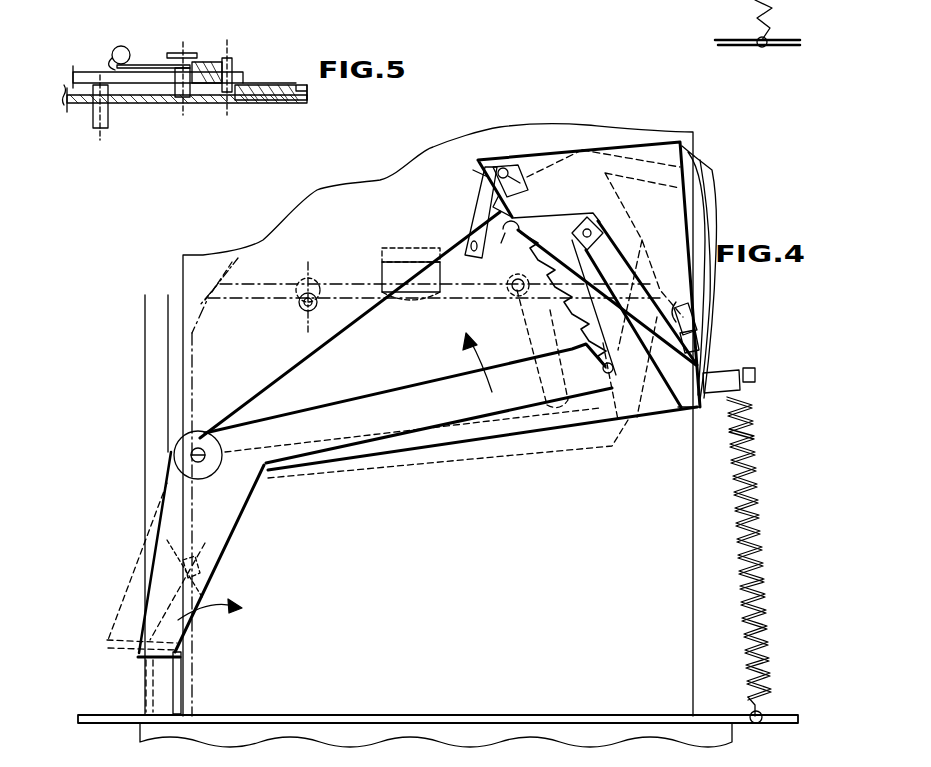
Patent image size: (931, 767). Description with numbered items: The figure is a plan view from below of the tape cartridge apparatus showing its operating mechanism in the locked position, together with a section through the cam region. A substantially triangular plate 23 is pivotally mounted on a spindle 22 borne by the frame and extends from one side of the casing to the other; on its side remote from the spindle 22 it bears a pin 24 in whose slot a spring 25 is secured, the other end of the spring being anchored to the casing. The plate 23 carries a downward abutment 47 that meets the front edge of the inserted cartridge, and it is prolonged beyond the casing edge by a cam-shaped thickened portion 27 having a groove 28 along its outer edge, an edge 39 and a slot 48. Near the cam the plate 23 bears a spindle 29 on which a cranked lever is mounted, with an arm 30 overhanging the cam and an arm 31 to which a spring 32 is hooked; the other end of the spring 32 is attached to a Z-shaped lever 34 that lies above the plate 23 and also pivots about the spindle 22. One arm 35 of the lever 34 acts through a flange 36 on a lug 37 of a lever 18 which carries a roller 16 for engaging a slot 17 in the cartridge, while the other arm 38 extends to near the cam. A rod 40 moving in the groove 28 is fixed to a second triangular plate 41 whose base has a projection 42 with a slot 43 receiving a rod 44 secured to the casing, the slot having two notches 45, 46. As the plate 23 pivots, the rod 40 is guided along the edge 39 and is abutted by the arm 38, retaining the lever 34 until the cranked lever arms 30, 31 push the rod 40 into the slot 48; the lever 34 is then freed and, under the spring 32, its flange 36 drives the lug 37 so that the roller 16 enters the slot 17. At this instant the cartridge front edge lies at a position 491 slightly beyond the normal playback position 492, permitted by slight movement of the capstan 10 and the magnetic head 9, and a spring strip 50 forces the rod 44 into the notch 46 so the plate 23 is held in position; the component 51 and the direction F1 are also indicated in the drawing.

In FIG. 4, the magnetic head 9 is at (382, 280).
In FIG. 4, the capstan 10 is at (313, 281).
In FIG. 4, the roller 16 is at (207, 597).
In FIG. 4, the slot 17 is at (227, 550).
In FIG. 4, the lever 18 is at (150, 330).
In FIG. 4, the spindle 22 is at (195, 455).
In FIG. 5, the triangular plate 23 is at (140, 106).
In FIG. 4, the triangular plate 23 is at (469, 429).
In FIG. 4, the pin 24 is at (758, 379).
In FIG. 4, the spring 25 is at (755, 573).
In FIG. 5, the cam-shaped thickened portion 27 is at (273, 83).
In FIG. 4, the cam-shaped thickened portion 27 is at (700, 205).
In FIG. 5, the groove 28 is at (303, 85).
In FIG. 4, the groove 28 is at (707, 220).
In FIG. 5, the spindle 29 is at (183, 53).
In FIG. 4, the spindle 29 is at (590, 224).
In FIG. 5, the arm 30 is at (200, 67).
In FIG. 4, the arm 30 is at (699, 340).
In FIG. 5, the arm 31 is at (147, 67).
In FIG. 4, the arm 31 is at (553, 266).
In FIG. 5, the spring 32 is at (117, 50).
In FIG. 4, the spring 32 is at (545, 326).
In FIG. 4, the Z-shaped lever 34 is at (345, 435).
In FIG. 4, the arm 35 is at (160, 560).
In FIG. 4, the flange 36 is at (142, 662).
In FIG. 4, the lug 37 is at (182, 680).
In FIG. 4, the arm 38 is at (612, 330).
In FIG. 5, the edge 39 is at (253, 107).
In FIG. 4, the edge 39 is at (632, 214).
In FIG. 5, the rod 40 is at (227, 57).
In FIG. 4, the rod 40 is at (690, 322).
In FIG. 5, the triangular plate 41 is at (90, 77).
In FIG. 4, the triangular plate 41 is at (660, 165).
In FIG. 4, the projection 42 is at (545, 180).
In FIG. 4, the slot 43 is at (512, 165).
In FIG. 4, the rod 44 is at (503, 168).
In FIG. 4, the notch 45 is at (528, 195).
In FIG. 4, the notch 46 is at (508, 235).
In FIG. 5, the abutment 47 is at (95, 117).
In FIG. 4, the abutment 47 is at (516, 300).
In FIG. 4, the slot 48 is at (676, 302).
In FIG. 4, the position 491 is at (227, 282).
In FIG. 4, the normal playback position 492 is at (225, 300).
In FIG. 4, the spring strip 50 is at (477, 203).
In FIG. 4, the strip 51 is at (468, 234).
In FIG. 4, the force direction F1 is at (258, 630).